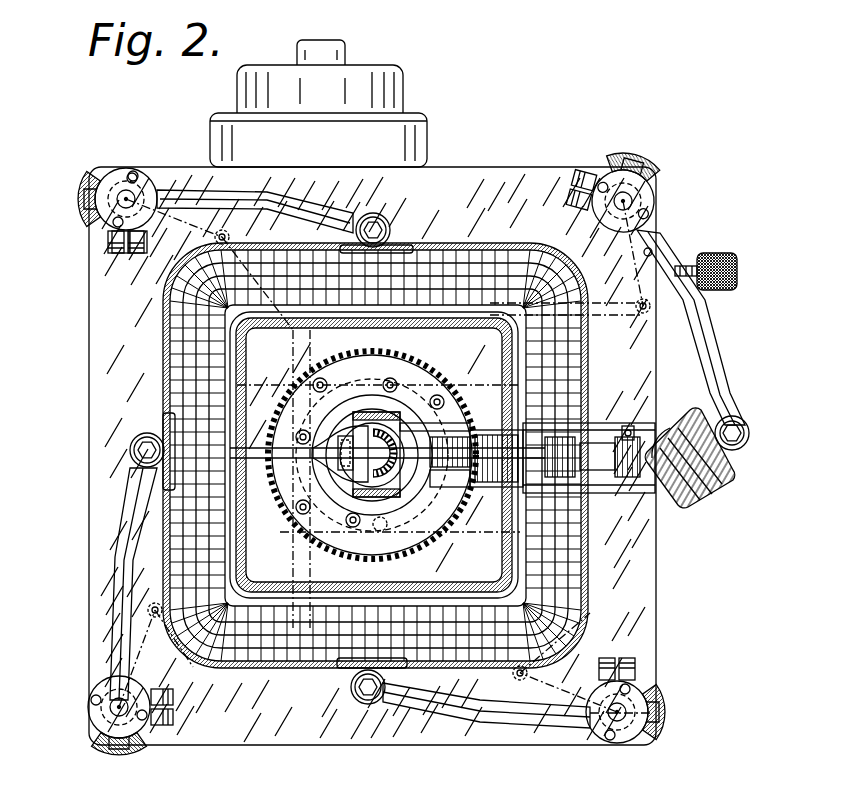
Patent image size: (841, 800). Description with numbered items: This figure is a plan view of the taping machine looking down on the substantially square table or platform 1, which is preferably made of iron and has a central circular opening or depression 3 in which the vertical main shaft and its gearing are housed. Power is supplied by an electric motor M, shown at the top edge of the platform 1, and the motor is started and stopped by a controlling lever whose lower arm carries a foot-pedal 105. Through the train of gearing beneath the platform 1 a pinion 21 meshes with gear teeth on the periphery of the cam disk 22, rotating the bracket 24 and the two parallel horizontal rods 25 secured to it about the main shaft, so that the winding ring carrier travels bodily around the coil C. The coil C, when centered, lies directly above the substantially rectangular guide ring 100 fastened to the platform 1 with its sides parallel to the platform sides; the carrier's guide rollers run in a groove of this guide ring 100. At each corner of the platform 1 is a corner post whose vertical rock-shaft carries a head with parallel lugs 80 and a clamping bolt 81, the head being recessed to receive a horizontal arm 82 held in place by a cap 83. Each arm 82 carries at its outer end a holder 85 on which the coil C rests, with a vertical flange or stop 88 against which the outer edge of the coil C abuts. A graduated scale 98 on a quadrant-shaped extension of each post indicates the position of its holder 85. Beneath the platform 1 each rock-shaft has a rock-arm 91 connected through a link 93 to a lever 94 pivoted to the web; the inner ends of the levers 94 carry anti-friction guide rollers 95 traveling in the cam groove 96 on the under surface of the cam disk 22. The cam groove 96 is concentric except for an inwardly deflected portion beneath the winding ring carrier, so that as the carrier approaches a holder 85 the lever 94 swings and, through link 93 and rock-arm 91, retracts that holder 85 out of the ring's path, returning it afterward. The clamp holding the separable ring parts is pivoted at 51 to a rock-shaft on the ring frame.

The table or platform 1 is at (105, 367).
The electric motor M is at (427, 137).
The coil C is at (185, 320).
The guide ring 100 is at (507, 243).
The levers 94 is at (282, 338).
The links 93 is at (606, 318).
The graduated scale 98 is at (80, 185).
The cap 83 is at (140, 182).
The parallel lugs 80 is at (118, 256).
The clamping bolt 81 is at (143, 256).
The horizontal arm 82 is at (270, 204).
The vertical flange or stop 88 is at (390, 233).
The rock-arm 91 is at (650, 253).
The foot-pedal 105 is at (720, 256).
The holder or support 85 is at (705, 493).
The central circular opening or depression 3 is at (312, 372).
The anti-friction guide rollers 95 is at (390, 380).
The cam groove 96 is at (437, 397).
The bracket 24 is at (340, 470).
The cam disk 22 is at (425, 383).
The pinion 21 is at (495, 425).
The parallel horizontal rods 25 is at (663, 425).
The pivot of clamp 51 is at (642, 425).